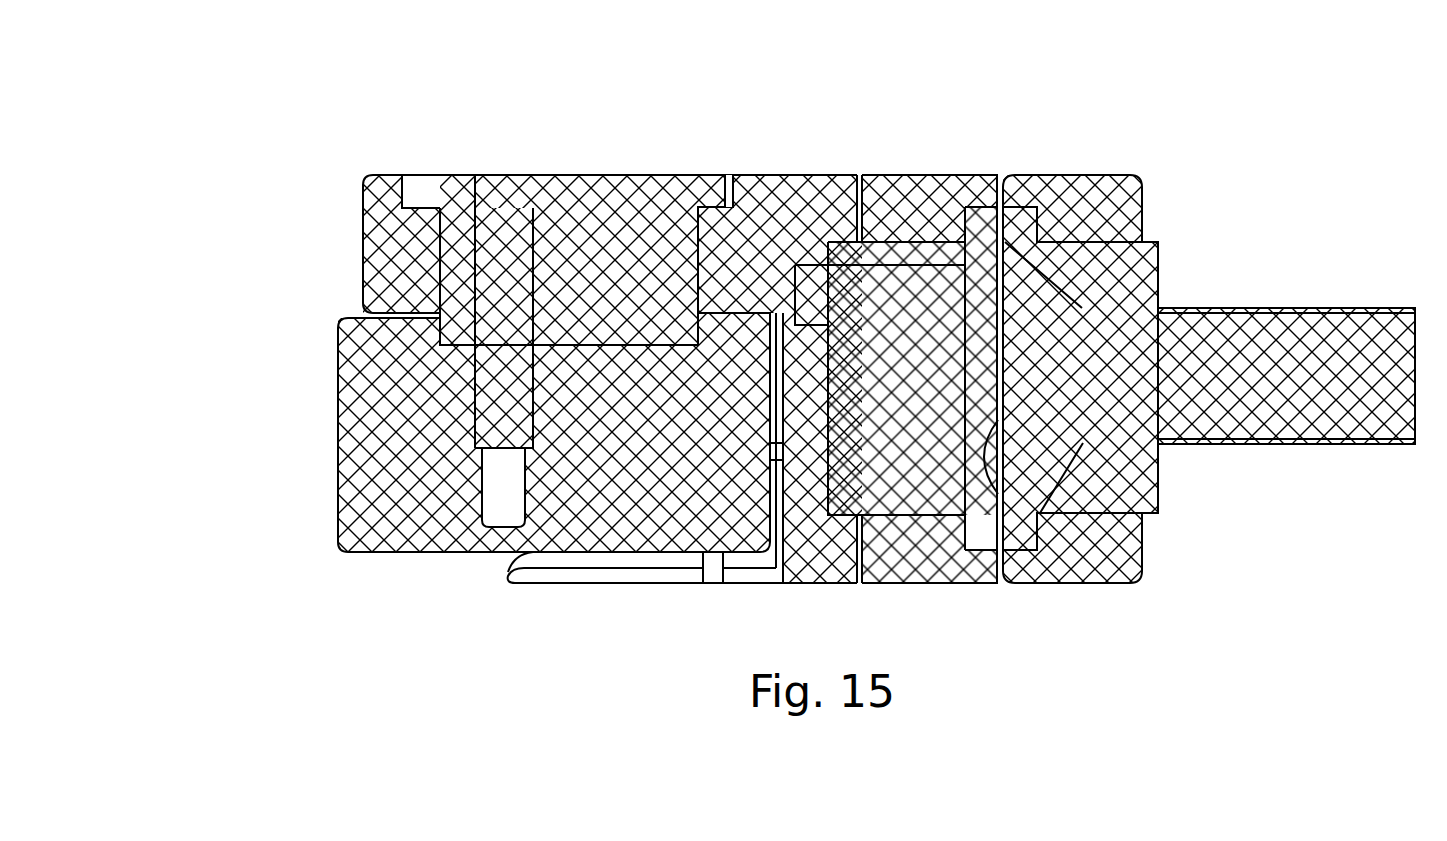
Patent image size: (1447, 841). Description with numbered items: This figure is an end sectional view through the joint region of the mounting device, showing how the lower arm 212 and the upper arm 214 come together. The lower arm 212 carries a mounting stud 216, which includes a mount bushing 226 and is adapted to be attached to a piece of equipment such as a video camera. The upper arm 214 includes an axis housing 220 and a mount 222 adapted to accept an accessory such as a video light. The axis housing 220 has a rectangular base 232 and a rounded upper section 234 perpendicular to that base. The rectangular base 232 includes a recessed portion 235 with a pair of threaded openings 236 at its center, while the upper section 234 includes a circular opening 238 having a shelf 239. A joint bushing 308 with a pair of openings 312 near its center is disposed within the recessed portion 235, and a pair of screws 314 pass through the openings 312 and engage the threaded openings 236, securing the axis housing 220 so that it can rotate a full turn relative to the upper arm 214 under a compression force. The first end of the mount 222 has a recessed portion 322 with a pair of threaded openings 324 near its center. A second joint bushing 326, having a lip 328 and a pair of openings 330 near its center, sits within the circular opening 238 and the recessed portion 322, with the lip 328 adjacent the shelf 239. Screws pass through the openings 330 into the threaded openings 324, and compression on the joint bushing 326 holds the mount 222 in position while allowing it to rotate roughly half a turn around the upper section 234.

The lower arm 212 is at (1065, 173).
The upper arm 214 is at (945, 173).
The mounting stud 216 is at (1215, 308).
The axis housing 220 is at (788, 173).
The mount 222 is at (338, 507).
The mount bushing 226 is at (1160, 473).
The rectangular base 232 is at (800, 588).
The rounded upper section 234 is at (363, 222).
The recessed portion 235 is at (887, 553).
The threaded openings 236 is at (812, 263).
The circular opening 238 is at (698, 223).
The shelf 239 is at (421, 200).
The joint bushing 308 is at (1075, 575).
The openings 312 is at (938, 260).
The screws 314 is at (682, 522).
The recessed portion 322 is at (502, 190).
The threaded openings 324 is at (482, 448).
The joint bushing 326 is at (600, 173).
The lip 328 is at (725, 173).
The openings 330 is at (533, 233).